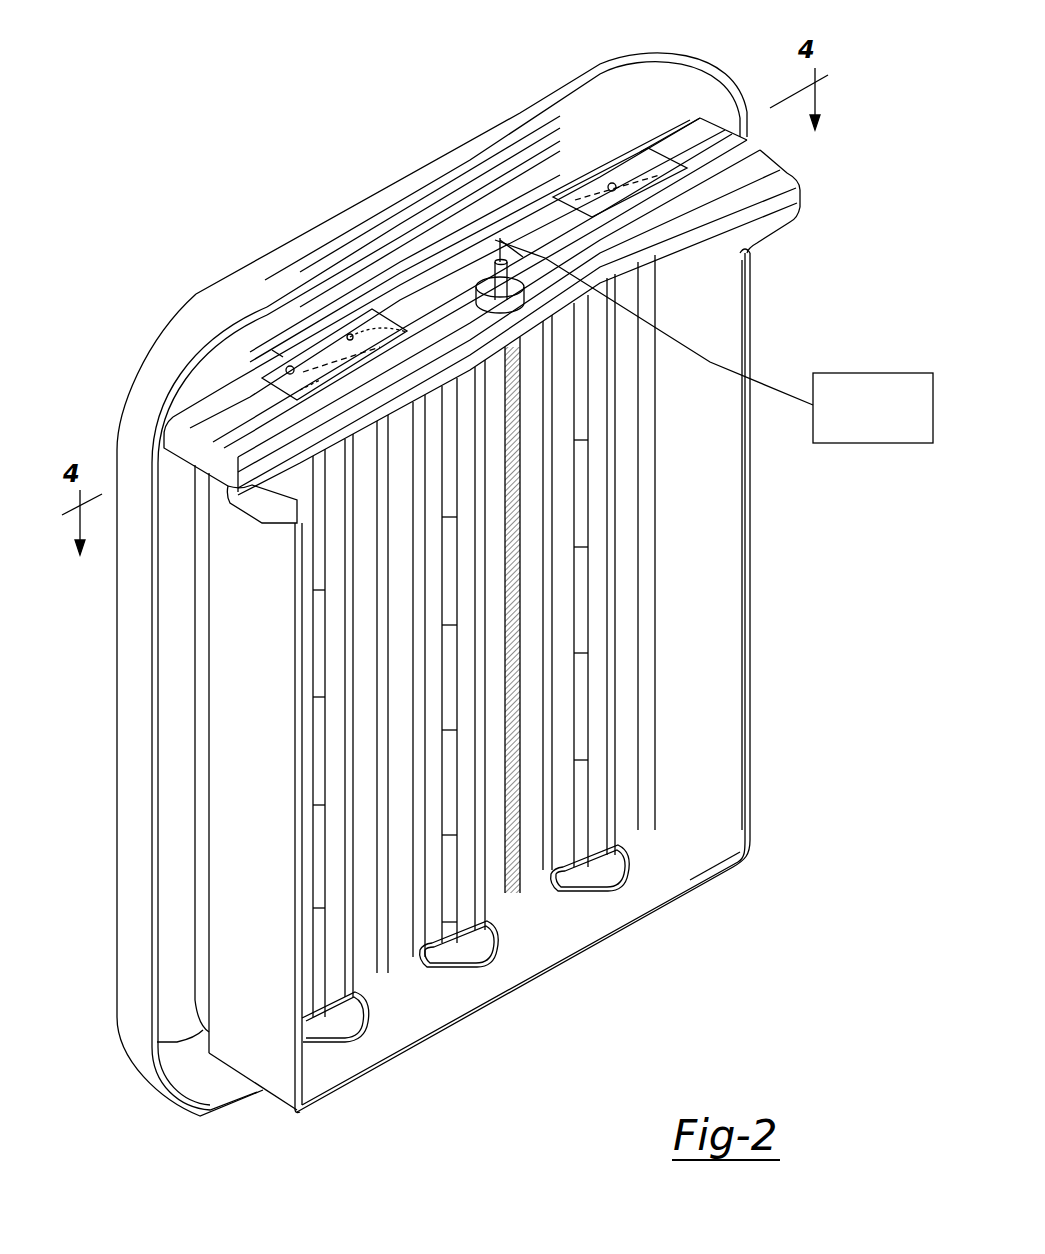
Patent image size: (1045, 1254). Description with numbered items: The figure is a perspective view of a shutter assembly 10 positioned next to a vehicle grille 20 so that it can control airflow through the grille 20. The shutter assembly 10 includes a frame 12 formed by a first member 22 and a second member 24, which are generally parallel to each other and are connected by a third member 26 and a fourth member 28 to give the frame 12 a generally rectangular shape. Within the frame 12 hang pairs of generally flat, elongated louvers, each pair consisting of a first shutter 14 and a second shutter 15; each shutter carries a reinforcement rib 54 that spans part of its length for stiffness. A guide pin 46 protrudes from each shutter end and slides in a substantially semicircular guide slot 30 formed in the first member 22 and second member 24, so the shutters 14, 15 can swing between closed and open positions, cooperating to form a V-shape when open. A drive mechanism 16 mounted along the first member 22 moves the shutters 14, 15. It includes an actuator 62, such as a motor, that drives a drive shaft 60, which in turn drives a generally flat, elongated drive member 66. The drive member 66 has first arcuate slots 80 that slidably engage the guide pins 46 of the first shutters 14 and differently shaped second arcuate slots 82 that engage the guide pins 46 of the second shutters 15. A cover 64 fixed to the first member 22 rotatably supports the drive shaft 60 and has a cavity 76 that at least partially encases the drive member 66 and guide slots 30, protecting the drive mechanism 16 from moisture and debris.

The shutter assembly 10 is at (763, 278).
The frame 12 is at (752, 535).
The first shutters 14 is at (307, 1000).
The second shutters 15 is at (627, 758).
The drive mechanism 16 is at (567, 190).
The grille 20 is at (602, 72).
The first member 22 is at (222, 490).
The second member 24 is at (687, 862).
The third member 26 is at (230, 758).
The fourth member 28 is at (720, 605).
The guide slots 30 is at (342, 1044).
The guide pin 46 is at (291, 366).
The reinforcement rib 54 is at (613, 627).
The drive shaft 60 is at (497, 265).
The actuator 62 is at (872, 373).
The cover 64 is at (240, 397).
The drive member 66 is at (318, 367).
The cavity 76 is at (698, 137).
The first arcuate slots 80 is at (383, 330).
The second arcuate slots 82 is at (320, 363).